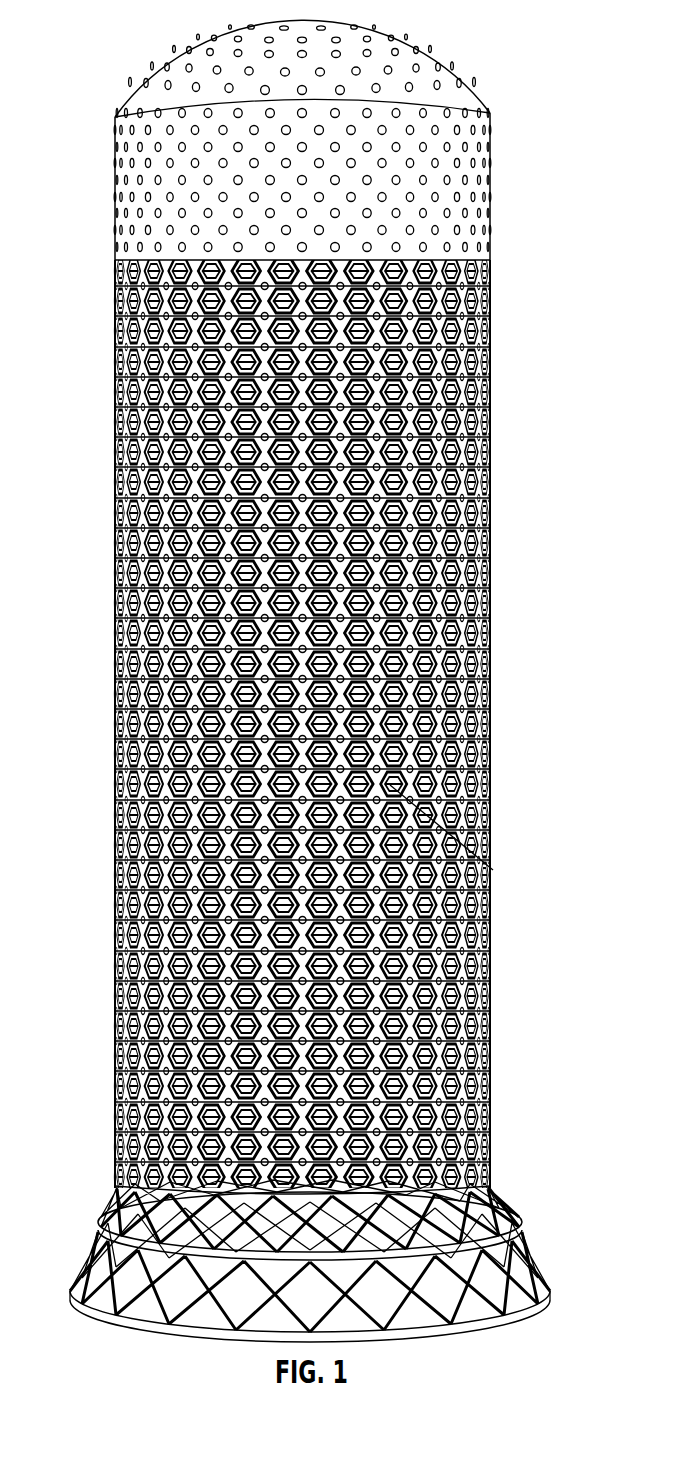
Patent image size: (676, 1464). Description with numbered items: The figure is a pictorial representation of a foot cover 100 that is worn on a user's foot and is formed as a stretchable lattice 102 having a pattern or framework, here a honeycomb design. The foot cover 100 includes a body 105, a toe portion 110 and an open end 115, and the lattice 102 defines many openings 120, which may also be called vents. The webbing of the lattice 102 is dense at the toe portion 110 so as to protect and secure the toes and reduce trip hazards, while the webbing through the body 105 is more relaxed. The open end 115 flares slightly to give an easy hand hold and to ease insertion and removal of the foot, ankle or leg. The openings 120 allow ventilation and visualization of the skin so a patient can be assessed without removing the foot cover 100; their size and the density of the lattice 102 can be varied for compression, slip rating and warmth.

The foot cover 100 is at (492, 630).
The lattice 102 is at (490, 465).
The body 105 is at (115, 553).
The toe portion 110 is at (210, 37).
The open end 115 is at (527, 1322).
The openings 120 is at (493, 870).